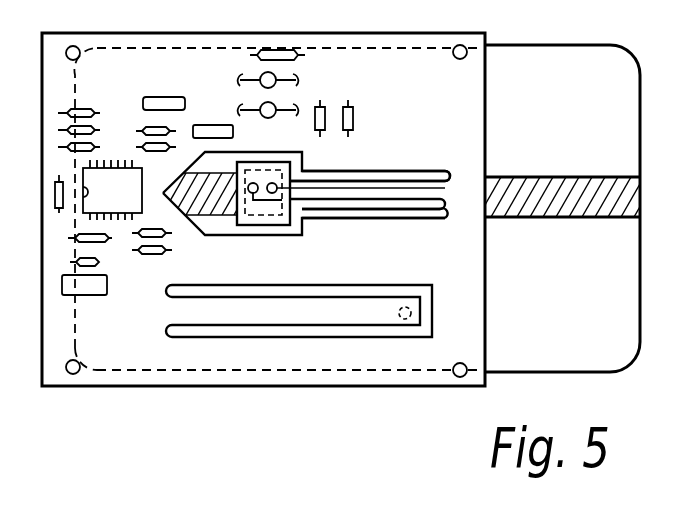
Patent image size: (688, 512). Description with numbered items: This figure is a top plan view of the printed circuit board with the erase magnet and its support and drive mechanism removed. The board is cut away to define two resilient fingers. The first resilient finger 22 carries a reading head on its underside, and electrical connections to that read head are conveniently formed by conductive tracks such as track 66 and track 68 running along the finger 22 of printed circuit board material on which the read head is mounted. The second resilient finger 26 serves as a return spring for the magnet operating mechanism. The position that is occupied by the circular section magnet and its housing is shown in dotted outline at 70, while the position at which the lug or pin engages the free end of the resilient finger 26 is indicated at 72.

The resilient finger 22 is at (418, 206).
The resilient finger 26 is at (298, 315).
The track 66 is at (375, 187).
The track 68 is at (390, 207).
The dotted outline of magnet and housing position 70 is at (205, 190).
The pin engagement position 72 is at (400, 318).